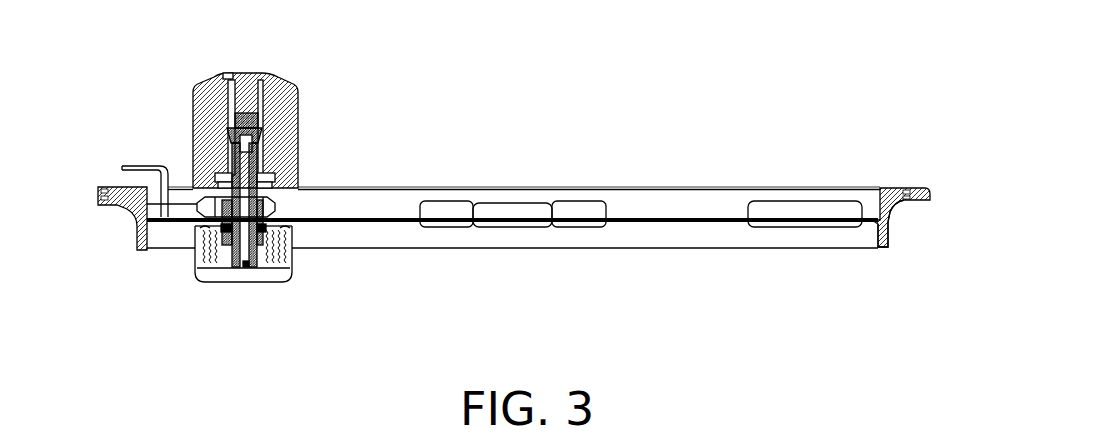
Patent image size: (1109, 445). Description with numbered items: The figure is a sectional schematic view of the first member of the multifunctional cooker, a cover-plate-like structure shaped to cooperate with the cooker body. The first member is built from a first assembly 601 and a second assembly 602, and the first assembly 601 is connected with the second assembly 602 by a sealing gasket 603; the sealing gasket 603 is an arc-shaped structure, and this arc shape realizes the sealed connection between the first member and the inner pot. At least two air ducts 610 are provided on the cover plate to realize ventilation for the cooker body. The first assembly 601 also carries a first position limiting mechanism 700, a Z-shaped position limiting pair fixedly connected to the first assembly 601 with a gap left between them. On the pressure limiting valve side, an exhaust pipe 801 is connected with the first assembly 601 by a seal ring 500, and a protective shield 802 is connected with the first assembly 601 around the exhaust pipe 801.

The seal ring 500 is at (215, 265).
The first assembly 601 is at (921, 185).
The second assembly 602 is at (923, 207).
The sealing gasket 603 is at (894, 234).
The air duct 610 is at (507, 208).
The first position limiting mechanism 700 is at (133, 168).
The exhaust pipe 801 is at (248, 263).
The protective shield 802 is at (296, 272).